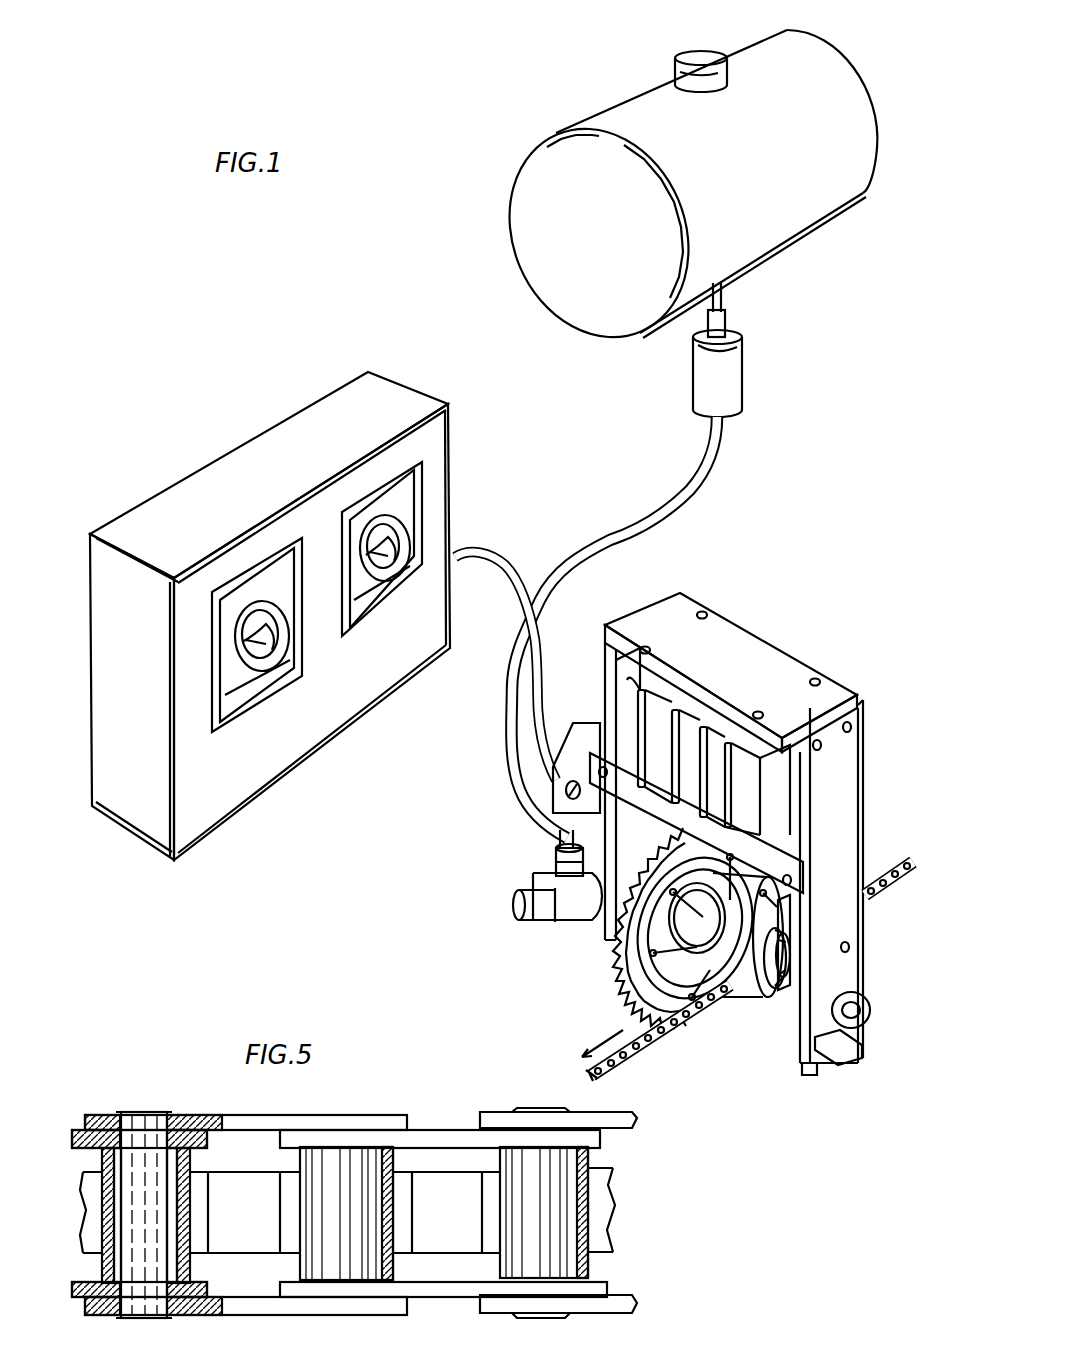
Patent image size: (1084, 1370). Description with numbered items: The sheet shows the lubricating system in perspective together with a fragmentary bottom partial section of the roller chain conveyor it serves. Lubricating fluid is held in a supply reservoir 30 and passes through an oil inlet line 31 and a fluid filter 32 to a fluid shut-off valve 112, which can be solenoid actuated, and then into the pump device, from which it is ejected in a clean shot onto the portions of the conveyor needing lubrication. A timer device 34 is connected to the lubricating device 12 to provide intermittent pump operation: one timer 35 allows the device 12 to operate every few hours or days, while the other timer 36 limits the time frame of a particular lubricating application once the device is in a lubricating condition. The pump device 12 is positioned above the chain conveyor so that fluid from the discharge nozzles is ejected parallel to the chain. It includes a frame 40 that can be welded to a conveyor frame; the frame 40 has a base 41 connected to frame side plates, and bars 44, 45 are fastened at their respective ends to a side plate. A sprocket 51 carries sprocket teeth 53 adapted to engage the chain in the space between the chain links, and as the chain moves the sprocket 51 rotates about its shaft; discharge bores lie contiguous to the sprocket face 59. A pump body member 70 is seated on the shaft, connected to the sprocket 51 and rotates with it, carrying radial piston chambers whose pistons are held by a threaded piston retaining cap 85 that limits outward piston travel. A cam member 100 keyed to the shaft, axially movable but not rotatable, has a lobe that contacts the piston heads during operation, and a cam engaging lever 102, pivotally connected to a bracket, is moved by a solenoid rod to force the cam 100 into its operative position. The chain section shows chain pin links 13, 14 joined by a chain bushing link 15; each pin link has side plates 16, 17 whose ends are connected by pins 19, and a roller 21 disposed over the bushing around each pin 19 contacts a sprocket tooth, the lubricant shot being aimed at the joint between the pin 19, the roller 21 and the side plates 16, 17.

In FIG. 1, the lubricating device 12 is at (850, 762).
In FIG. 5, the chain pin link 13 is at (220, 1125).
In FIG. 5, the chain pin link 14 is at (617, 1112).
In FIG. 5, the chain bushing link 15 is at (440, 1128).
In FIG. 5, the side plate 16 is at (263, 1117).
In FIG. 5, the side plate 17 is at (287, 1316).
In FIG. 5, the pin 19 is at (147, 1112).
In FIG. 5, the roller 21 is at (188, 1200).
In FIG. 1, the lubricating fluid supply reservoir 30 is at (522, 180).
In FIG. 1, the oil inlet line 31 is at (708, 463).
In FIG. 1, the fluid filter 32 is at (733, 383).
In FIG. 1, the timer device 34 is at (323, 592).
In FIG. 1, the timer 35 is at (410, 507).
In FIG. 1, the timer 36 is at (290, 642).
In FIG. 1, the frame 40 is at (738, 834).
In FIG. 1, the base 41 is at (820, 673).
In FIG. 1, the bar 44 is at (800, 863).
In FIG. 1, the bar 45 is at (870, 830).
In FIG. 1, the sprocket 51 is at (615, 963).
In FIG. 5, the sprocket teeth 53 is at (257, 1188).
In FIG. 1, the sprocket face 59 is at (693, 1010).
In FIG. 1, the pump body member 70 is at (708, 960).
In FIG. 1, the piston retaining cap 85 is at (733, 963).
In FIG. 1, the cam member 100 is at (773, 973).
In FIG. 1, the cam engaging lever 102 is at (790, 917).
In FIG. 1, the fluid shut-off valve 112 is at (556, 864).